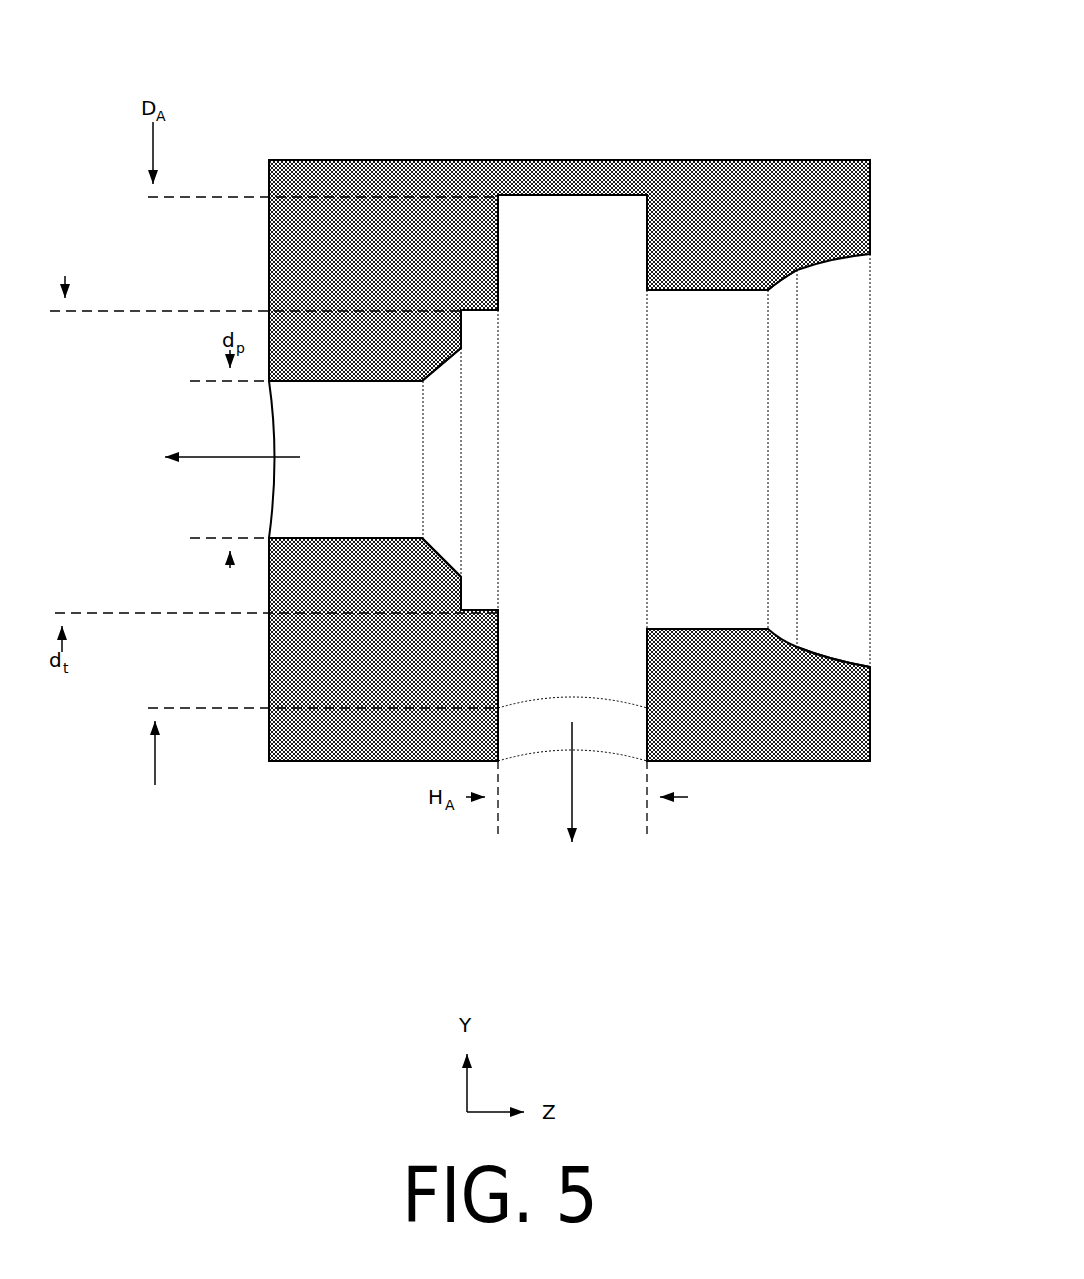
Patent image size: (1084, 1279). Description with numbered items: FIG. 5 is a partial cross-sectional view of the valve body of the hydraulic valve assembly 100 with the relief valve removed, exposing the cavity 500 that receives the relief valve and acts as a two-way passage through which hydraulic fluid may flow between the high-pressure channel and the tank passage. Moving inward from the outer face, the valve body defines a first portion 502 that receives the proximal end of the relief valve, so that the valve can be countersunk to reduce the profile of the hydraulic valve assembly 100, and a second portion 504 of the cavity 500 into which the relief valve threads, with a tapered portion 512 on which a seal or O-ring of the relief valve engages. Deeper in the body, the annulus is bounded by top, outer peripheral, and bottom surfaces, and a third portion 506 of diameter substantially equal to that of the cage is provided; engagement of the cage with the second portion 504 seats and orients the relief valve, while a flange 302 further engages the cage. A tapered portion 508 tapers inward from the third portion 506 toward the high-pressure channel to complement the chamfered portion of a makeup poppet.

The hydraulic valve assembly 100 is at (179, 33).
The cavity 500 is at (591, 466).
The third portion 506 is at (463, 290).
The tapered portion 512 is at (791, 300).
The second portion 504 is at (745, 614).
The first portion 502 is at (860, 640).
The tapered portion 508 is at (428, 562).
The flange 302 is at (446, 593).